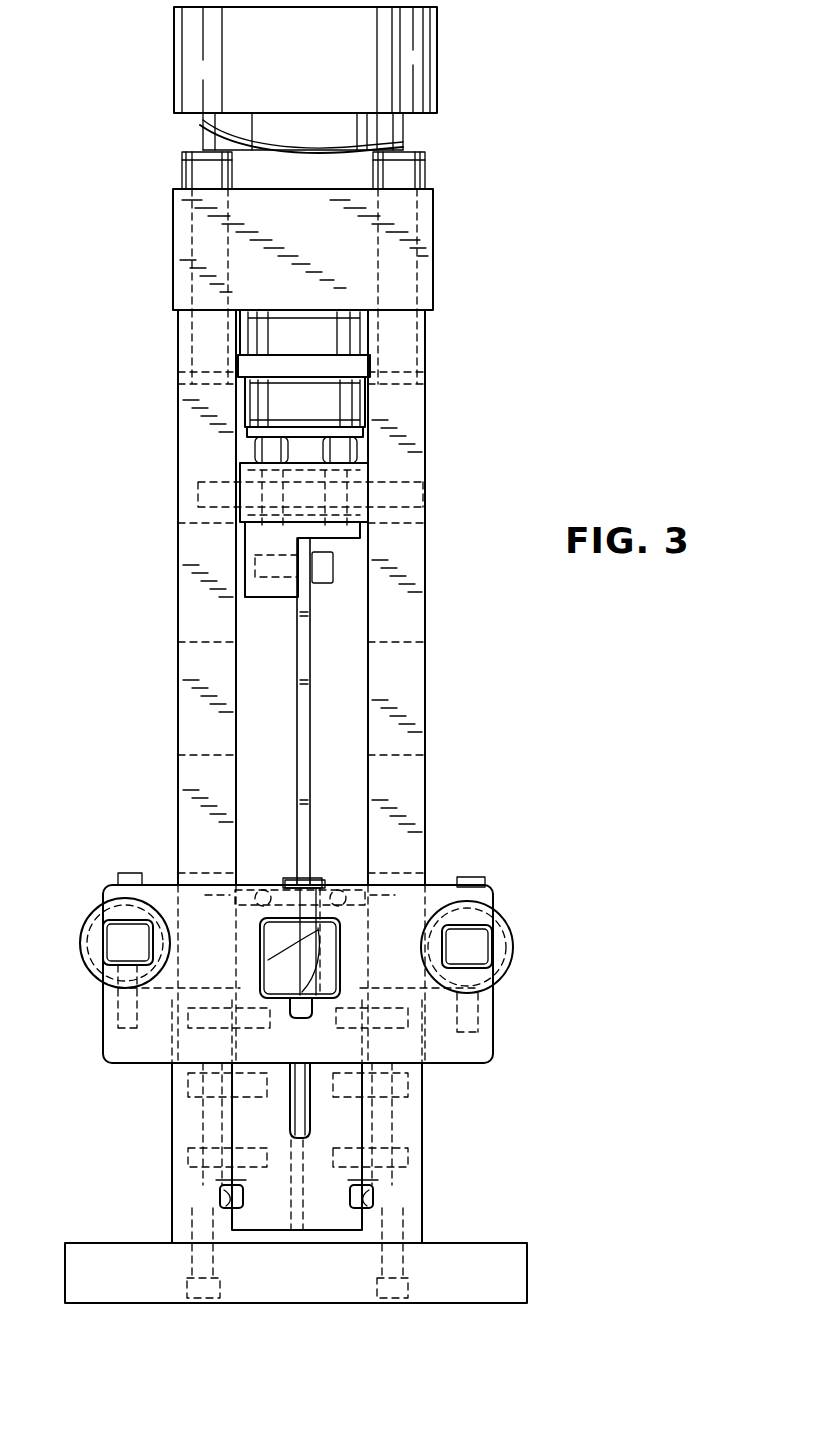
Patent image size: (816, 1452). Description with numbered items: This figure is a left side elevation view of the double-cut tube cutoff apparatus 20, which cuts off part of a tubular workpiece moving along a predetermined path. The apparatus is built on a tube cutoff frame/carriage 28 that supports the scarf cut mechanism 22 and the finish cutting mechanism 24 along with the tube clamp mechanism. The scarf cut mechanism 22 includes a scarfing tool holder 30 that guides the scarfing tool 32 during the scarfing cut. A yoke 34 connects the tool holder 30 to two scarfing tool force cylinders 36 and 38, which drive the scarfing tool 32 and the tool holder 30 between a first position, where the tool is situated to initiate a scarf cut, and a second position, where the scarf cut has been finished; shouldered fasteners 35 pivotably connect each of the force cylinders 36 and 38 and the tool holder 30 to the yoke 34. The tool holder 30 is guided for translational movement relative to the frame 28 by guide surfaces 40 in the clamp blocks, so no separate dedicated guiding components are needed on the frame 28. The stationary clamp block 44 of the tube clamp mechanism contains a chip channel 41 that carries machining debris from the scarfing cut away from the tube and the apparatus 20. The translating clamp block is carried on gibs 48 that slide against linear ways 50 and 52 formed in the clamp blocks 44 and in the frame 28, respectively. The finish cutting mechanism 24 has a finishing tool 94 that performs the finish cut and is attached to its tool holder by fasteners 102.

The tube cutoff apparatus 20 is at (557, 316).
The scarf cut mechanism 22 is at (503, 998).
The finish cutting mechanism 24 is at (348, 551).
The tube cutoff frame/carriage 28 is at (423, 708).
The scarfing tool holder 30 is at (296, 892).
The scarfing tool 32 is at (300, 1010).
The yoke 34 is at (432, 888).
The shouldered fasteners 35 is at (128, 873).
The scarfing tool force cylinder 36 is at (82, 946).
The scarfing tool force cylinder 38 is at (513, 947).
The guide surfaces 40 is at (322, 892).
The chip channel 41 is at (310, 1103).
The stationary clamp block 44 is at (270, 1138).
The gibs 48 is at (220, 1196).
The linear way 50 is at (213, 1207).
The linear way 52 is at (228, 1184).
The finishing tool 94 is at (307, 765).
The fasteners 102 is at (327, 583).